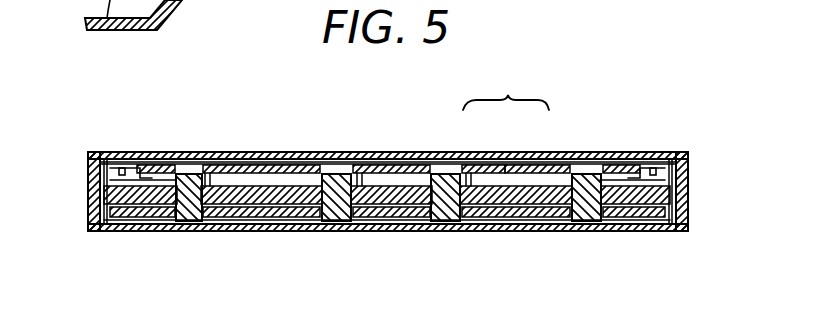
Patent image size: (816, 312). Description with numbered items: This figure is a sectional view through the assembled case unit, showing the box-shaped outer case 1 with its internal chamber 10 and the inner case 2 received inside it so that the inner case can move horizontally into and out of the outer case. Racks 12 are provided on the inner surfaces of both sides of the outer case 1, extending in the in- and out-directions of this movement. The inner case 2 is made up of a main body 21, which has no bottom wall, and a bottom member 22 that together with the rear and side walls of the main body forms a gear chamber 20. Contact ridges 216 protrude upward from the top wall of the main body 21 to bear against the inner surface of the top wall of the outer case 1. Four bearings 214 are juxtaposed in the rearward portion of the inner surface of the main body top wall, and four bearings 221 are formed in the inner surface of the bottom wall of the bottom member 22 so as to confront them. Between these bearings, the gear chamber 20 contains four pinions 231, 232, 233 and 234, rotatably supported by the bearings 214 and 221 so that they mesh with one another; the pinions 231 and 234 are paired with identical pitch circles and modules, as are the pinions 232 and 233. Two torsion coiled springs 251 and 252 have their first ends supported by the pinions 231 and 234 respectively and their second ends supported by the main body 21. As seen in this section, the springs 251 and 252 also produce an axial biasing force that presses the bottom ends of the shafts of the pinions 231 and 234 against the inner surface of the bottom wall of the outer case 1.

The outer case 1 is at (688, 158).
The inner case 2 is at (506, 89).
The chamber 10 is at (88, 162).
The racks 12 is at (88, 205).
The gear chamber 20 is at (232, 152).
The main body 21 is at (487, 152).
The bottom member 22 is at (518, 152).
The bearings 214 is at (176, 152).
The contact ridges 216 is at (110, 152).
The bearings 221 is at (219, 210).
The pinion 231 is at (130, 205).
The pinion 232 is at (294, 218).
The pinion 233 is at (397, 218).
The pinion 234 is at (555, 198).
The torsion coiled spring 251 is at (153, 152).
The torsion coiled spring 252 is at (622, 152).